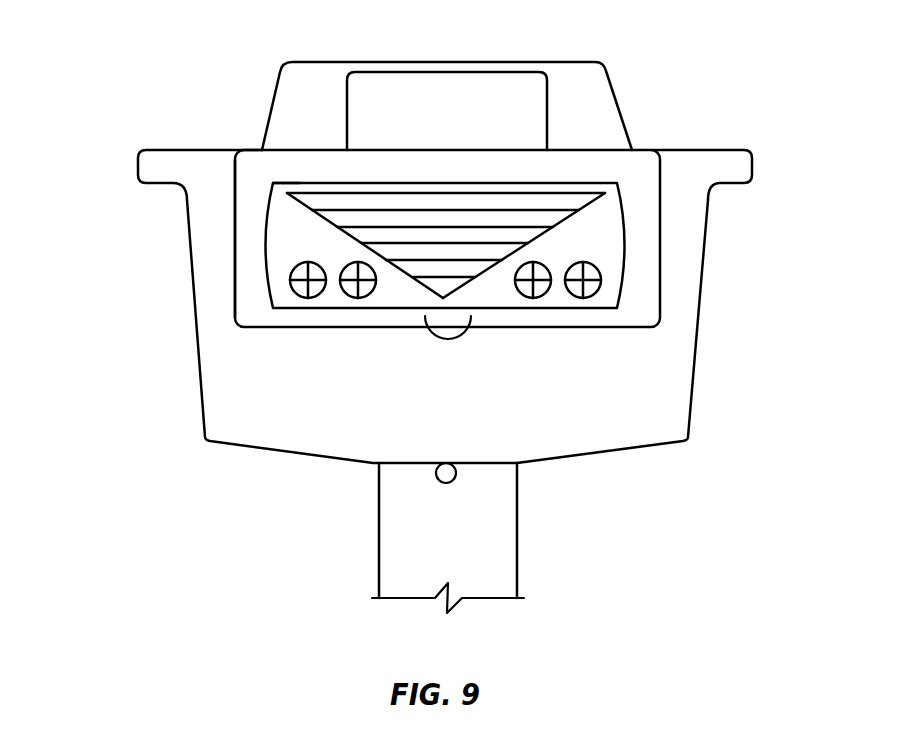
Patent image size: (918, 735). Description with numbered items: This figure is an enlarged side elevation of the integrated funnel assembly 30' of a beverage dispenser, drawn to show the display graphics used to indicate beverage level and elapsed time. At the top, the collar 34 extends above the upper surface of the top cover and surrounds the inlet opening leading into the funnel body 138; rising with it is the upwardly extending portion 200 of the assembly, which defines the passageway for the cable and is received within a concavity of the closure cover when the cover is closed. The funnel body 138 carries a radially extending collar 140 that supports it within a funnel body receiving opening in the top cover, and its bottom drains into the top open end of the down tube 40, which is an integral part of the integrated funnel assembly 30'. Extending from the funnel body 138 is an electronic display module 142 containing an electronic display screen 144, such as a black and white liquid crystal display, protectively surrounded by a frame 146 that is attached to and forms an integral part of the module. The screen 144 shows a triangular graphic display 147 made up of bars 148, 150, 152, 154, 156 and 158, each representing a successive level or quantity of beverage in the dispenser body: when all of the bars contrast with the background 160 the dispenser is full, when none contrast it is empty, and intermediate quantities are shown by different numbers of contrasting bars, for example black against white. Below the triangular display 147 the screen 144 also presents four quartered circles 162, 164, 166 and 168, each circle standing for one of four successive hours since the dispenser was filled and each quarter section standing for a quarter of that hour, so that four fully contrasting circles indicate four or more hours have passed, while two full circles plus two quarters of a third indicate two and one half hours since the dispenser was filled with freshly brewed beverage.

The integrated funnel assembly 30' is at (758, 93).
The collar 34 is at (601, 70).
The down tube 40 is at (517, 515).
The funnel body 138 is at (692, 280).
The radially extending collar 140 is at (750, 167).
The electronic display module 142 is at (220, 248).
The electronic display screen 144 is at (230, 265).
The frame 146 is at (245, 161).
The triangular graphic display 147 is at (300, 196).
The bar 148 is at (307, 203).
The bar 150 is at (390, 220).
The bar 152 is at (471, 240).
The bar 154 is at (495, 252).
The bar 156 is at (472, 270).
The bar 158 is at (423, 283).
The background 160 is at (265, 230).
The quartered circle 162 is at (295, 292).
The quartered circle 164 is at (345, 295).
The quartered circle 166 is at (548, 292).
The quartered circle 168 is at (598, 290).
The upwardly extending portion 200 is at (445, 88).